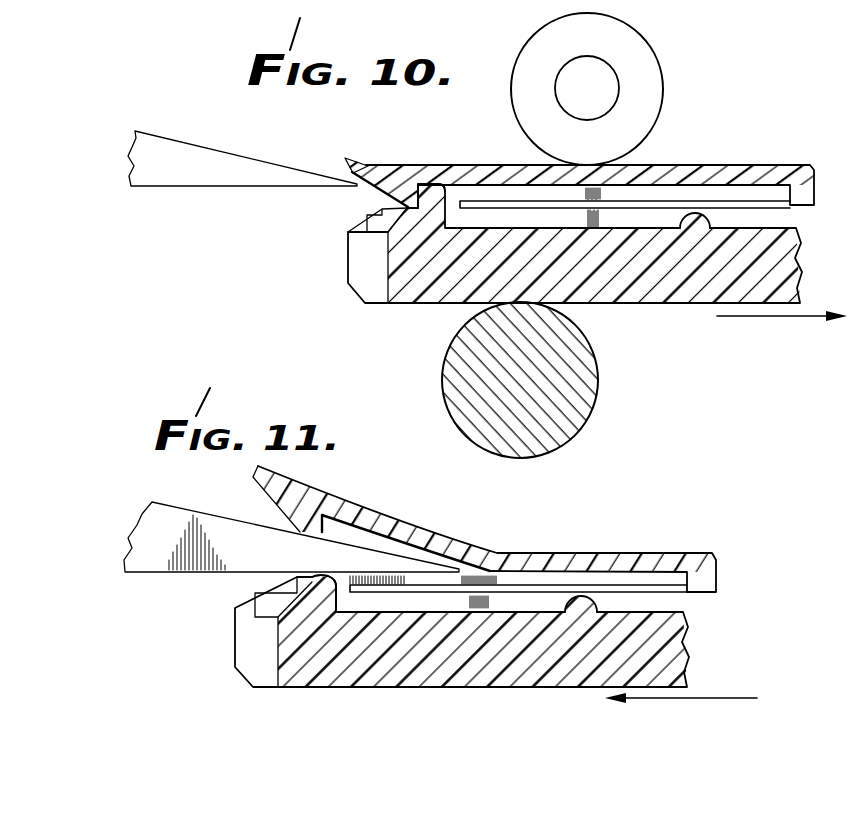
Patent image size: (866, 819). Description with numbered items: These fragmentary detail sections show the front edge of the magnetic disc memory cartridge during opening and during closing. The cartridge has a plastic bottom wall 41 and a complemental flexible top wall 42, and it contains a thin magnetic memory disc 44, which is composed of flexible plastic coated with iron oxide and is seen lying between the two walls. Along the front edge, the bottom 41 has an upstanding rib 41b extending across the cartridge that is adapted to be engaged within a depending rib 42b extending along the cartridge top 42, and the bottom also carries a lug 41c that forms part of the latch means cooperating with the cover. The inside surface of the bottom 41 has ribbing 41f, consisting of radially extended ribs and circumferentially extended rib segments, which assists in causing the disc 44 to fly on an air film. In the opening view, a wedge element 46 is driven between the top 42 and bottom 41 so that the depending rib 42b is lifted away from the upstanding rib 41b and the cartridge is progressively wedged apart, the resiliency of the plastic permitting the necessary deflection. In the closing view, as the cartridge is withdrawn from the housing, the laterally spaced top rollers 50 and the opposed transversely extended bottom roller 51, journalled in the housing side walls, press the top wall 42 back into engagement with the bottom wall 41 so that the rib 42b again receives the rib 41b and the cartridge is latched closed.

In FIG. 10, the bottom wall 41 is at (448, 262).
In FIG. 11, the bottom wall 41 is at (366, 675).
In FIG. 10, the upstanding rib 41b is at (432, 190).
In FIG. 11, the upstanding rib 41b is at (324, 584).
In FIG. 10, the lug 41c is at (378, 232).
In FIG. 11, the lug 41c is at (268, 610).
In FIG. 10, the ribbing 41f is at (700, 222).
In FIG. 11, the ribbing 41f is at (586, 598).
In FIG. 10, the flexible top wall 42 is at (680, 175).
In FIG. 11, the flexible top wall 42 is at (624, 552).
In FIG. 10, the depending rib 42b is at (412, 200).
In FIG. 10, the magnetic memory disc 44 is at (752, 205).
In FIG. 11, the magnetic memory disc 44 is at (524, 590).
In FIG. 10, the wedge element 46 is at (242, 158).
In FIG. 11, the wedge element 46 is at (291, 537).
In FIG. 10, the top roller 50 is at (662, 62).
In FIG. 10, the bottom roller 51 is at (570, 410).